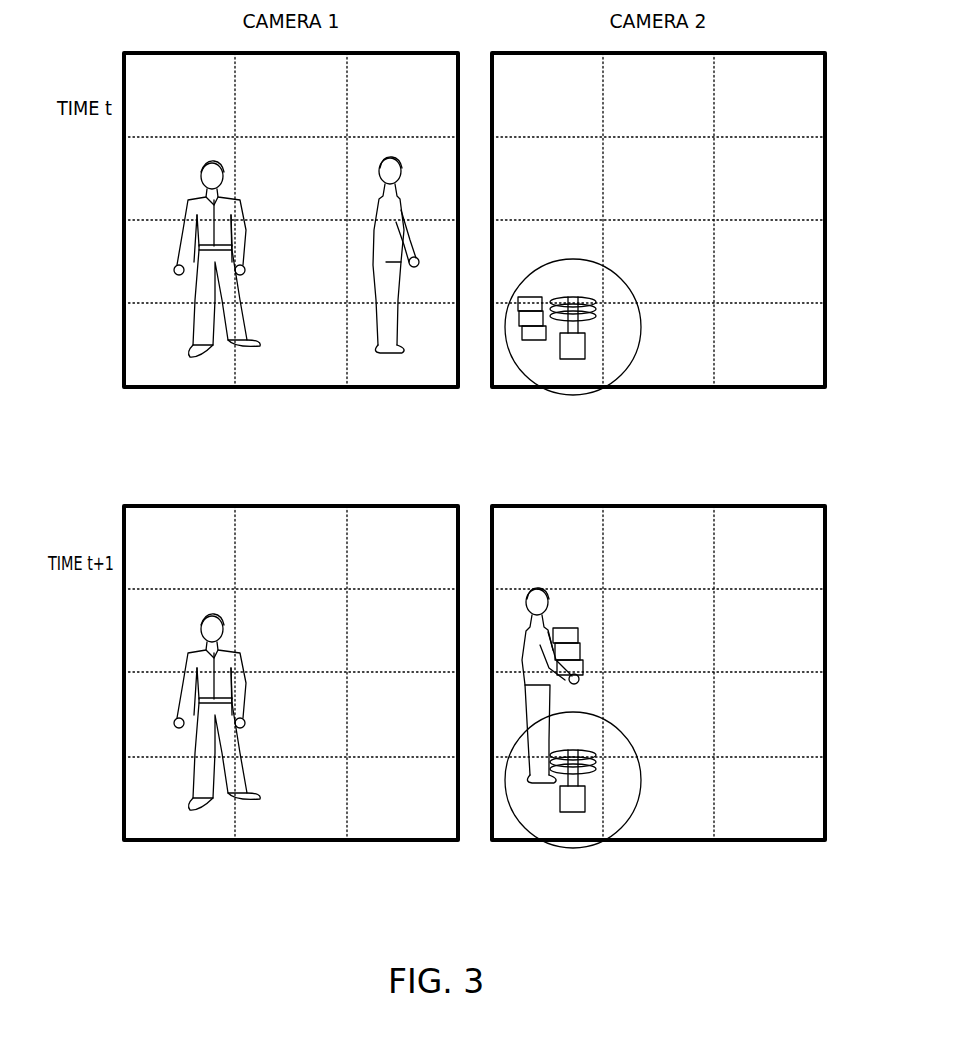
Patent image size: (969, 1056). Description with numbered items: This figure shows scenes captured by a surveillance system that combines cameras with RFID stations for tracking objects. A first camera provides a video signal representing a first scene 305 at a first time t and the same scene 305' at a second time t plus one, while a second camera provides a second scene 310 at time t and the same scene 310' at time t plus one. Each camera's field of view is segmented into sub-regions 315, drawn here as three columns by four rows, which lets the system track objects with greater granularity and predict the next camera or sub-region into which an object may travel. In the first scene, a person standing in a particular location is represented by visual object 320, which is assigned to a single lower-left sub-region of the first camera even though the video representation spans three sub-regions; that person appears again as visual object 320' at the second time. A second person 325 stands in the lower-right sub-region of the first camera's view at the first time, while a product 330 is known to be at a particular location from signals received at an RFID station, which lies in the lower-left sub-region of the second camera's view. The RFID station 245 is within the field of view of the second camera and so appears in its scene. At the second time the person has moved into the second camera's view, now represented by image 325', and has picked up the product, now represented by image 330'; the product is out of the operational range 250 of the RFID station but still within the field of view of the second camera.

The first scene 305 is at (291, 206).
The second scene 310 is at (658, 206).
The sub-regions 315 is at (371, 88).
The visual object 320 is at (169, 259).
The person 325 is at (387, 291).
The product 330 is at (535, 362).
The RFID station 245 is at (585, 345).
The operational range 250 is at (510, 353).
The first scene at time t+1 305' is at (291, 659).
The second scene at time t+1 310' is at (659, 659).
The visual object at time t+1 320' is at (167, 712).
The image of person at time t+1 325' is at (539, 668).
The image of product at time t+1 330' is at (550, 576).